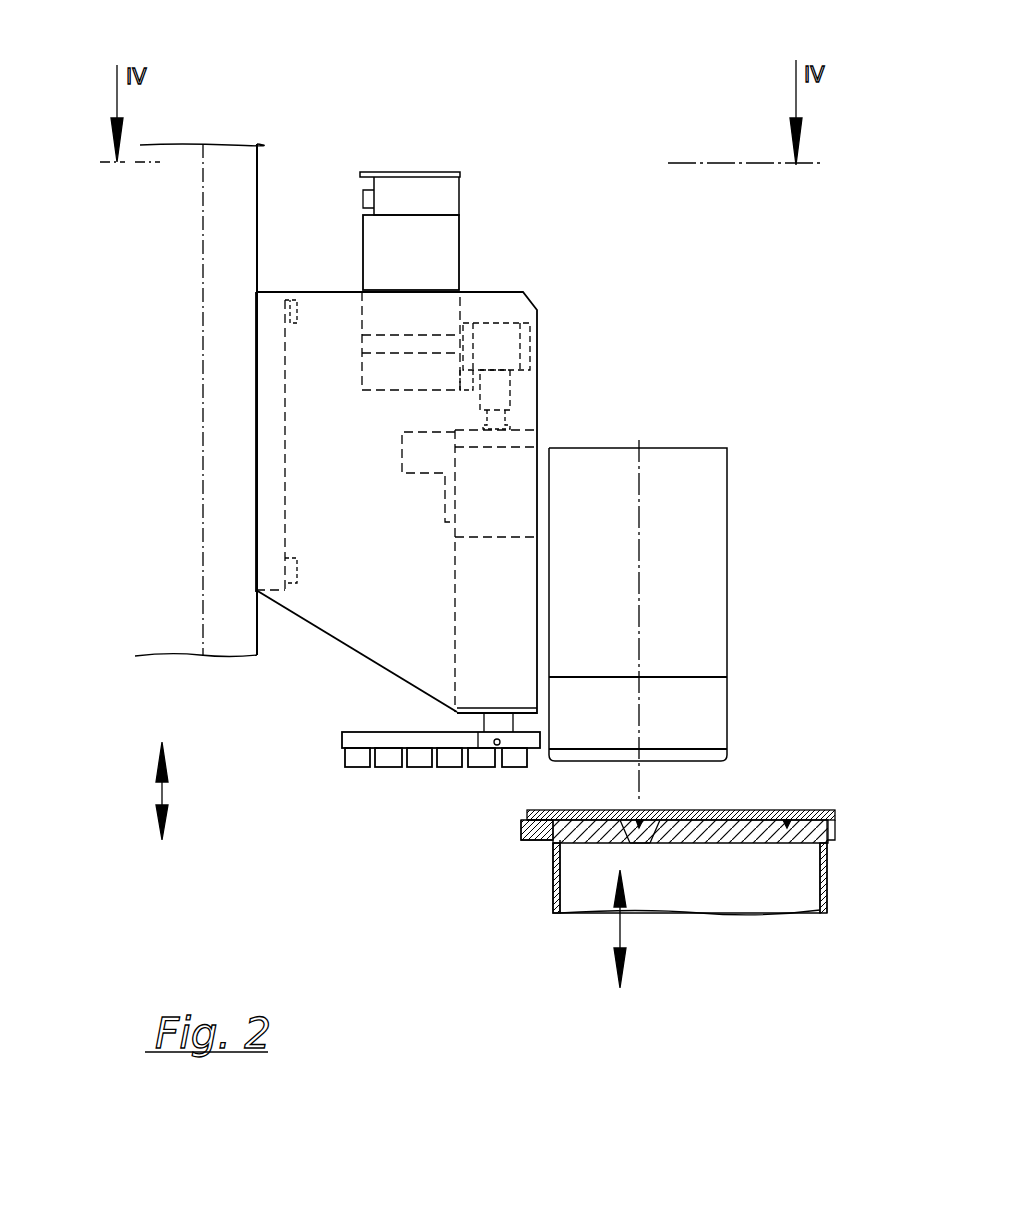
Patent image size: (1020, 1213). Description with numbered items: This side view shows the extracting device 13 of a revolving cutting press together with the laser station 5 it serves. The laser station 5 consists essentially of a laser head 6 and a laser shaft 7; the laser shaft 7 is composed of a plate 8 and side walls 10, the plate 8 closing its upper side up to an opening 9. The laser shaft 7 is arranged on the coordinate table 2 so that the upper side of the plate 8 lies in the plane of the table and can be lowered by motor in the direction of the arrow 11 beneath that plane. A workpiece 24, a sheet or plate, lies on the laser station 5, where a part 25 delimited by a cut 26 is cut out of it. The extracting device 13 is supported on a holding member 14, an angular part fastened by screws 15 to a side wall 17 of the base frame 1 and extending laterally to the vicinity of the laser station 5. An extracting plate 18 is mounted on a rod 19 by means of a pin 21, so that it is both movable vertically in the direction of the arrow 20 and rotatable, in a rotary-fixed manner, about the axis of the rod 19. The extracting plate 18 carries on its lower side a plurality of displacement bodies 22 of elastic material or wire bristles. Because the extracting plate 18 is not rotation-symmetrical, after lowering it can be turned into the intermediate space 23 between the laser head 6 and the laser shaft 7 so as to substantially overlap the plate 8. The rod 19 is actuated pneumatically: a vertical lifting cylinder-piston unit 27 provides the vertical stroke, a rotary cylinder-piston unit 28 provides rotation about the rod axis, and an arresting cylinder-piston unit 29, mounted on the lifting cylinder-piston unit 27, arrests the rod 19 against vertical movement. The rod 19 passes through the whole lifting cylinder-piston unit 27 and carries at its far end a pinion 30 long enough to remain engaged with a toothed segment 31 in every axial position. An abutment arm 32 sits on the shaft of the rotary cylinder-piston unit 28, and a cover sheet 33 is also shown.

The base frame 1 is at (168, 178).
The coordinate table 2 is at (553, 855).
The laser station 5 is at (801, 581).
The laser head 6 is at (703, 508).
The laser shaft 7 is at (768, 878).
The plate 8 is at (745, 830).
The opening 9 is at (636, 825).
The side walls 10 is at (565, 895).
The arrow 11 is at (622, 928).
The extracting device 13 is at (575, 340).
The holding member 14 is at (508, 312).
The screws 15 is at (305, 290).
The side wall 17 is at (258, 168).
The extracting plate 18 is at (355, 738).
The rod 19 is at (510, 407).
The arrow 20 is at (155, 792).
The pin 21 is at (495, 748).
The displacement bodies 22 is at (388, 768).
The intermediate space 23 is at (685, 790).
The workpiece 24 is at (536, 840).
The part 25 is at (760, 810).
The cut 26 is at (657, 825).
The lifting cylinder-piston unit 27 is at (480, 645).
The rotary cylinder-piston unit 28 is at (445, 243).
The arresting cylinder-piston unit 29 is at (415, 453).
The pinion 30 is at (523, 337).
The toothed segment 31 is at (448, 378).
The abutment arm 32 is at (368, 195).
The cover sheet 33 is at (403, 190).